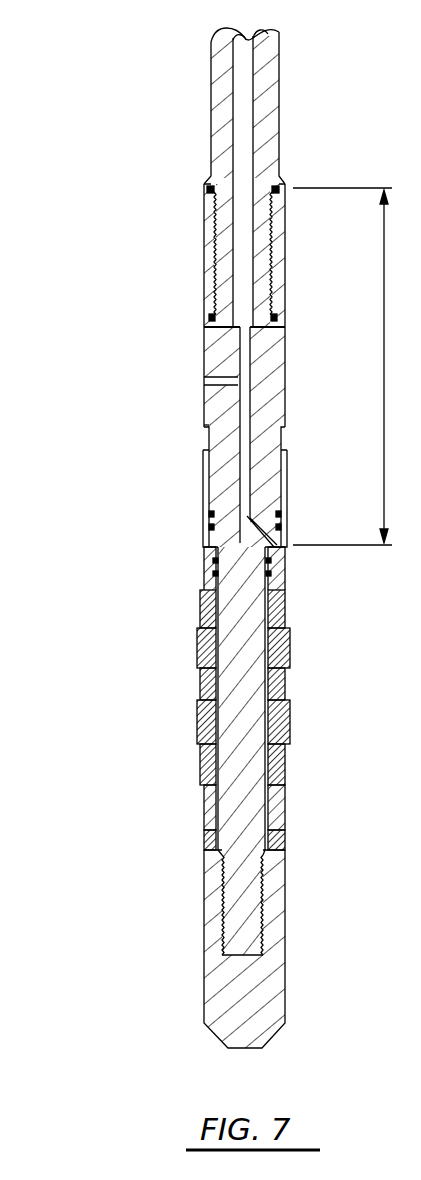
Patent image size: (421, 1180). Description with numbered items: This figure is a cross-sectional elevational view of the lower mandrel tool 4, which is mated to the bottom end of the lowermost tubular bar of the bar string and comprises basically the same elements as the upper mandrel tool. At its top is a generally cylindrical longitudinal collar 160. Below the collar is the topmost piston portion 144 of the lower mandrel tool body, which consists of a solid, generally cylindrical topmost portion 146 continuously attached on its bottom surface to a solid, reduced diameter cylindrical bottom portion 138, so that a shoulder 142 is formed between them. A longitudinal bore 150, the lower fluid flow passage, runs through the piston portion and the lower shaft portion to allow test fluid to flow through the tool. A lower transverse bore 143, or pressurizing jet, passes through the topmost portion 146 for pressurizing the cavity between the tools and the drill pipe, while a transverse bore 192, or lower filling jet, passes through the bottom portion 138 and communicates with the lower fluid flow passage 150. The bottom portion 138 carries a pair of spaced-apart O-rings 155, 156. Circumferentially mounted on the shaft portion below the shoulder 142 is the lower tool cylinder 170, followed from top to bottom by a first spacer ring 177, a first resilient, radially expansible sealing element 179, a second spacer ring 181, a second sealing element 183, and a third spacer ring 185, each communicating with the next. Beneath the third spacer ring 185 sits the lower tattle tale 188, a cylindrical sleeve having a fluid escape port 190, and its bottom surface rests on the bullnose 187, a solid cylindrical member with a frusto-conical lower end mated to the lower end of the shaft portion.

The lower mandrel tool 4 is at (221, 538).
The collar 160 is at (268, 92).
The topmost portion 146 is at (262, 357).
The longitudinal bore 150 is at (243, 423).
The lower transverse bore 143 is at (222, 382).
The shoulder 142 is at (205, 431).
The bottom portion 138 is at (263, 452).
The O-ring 155 is at (210, 515).
The O-ring 156 is at (206, 527).
The transverse bore 192 is at (287, 537).
The topmost piston portion 144 is at (349, 366).
The lower tool cylinder 170 is at (288, 566).
The first spacer ring 177 is at (288, 603).
The first sealing element 179 is at (291, 643).
The second spacer ring 181 is at (289, 675).
The second sealing element 183 is at (291, 712).
The third spacer ring 185 is at (289, 748).
The lower tattle tale 188 is at (287, 799).
The fluid escape port 190 is at (288, 843).
The bullnose 187 is at (283, 986).